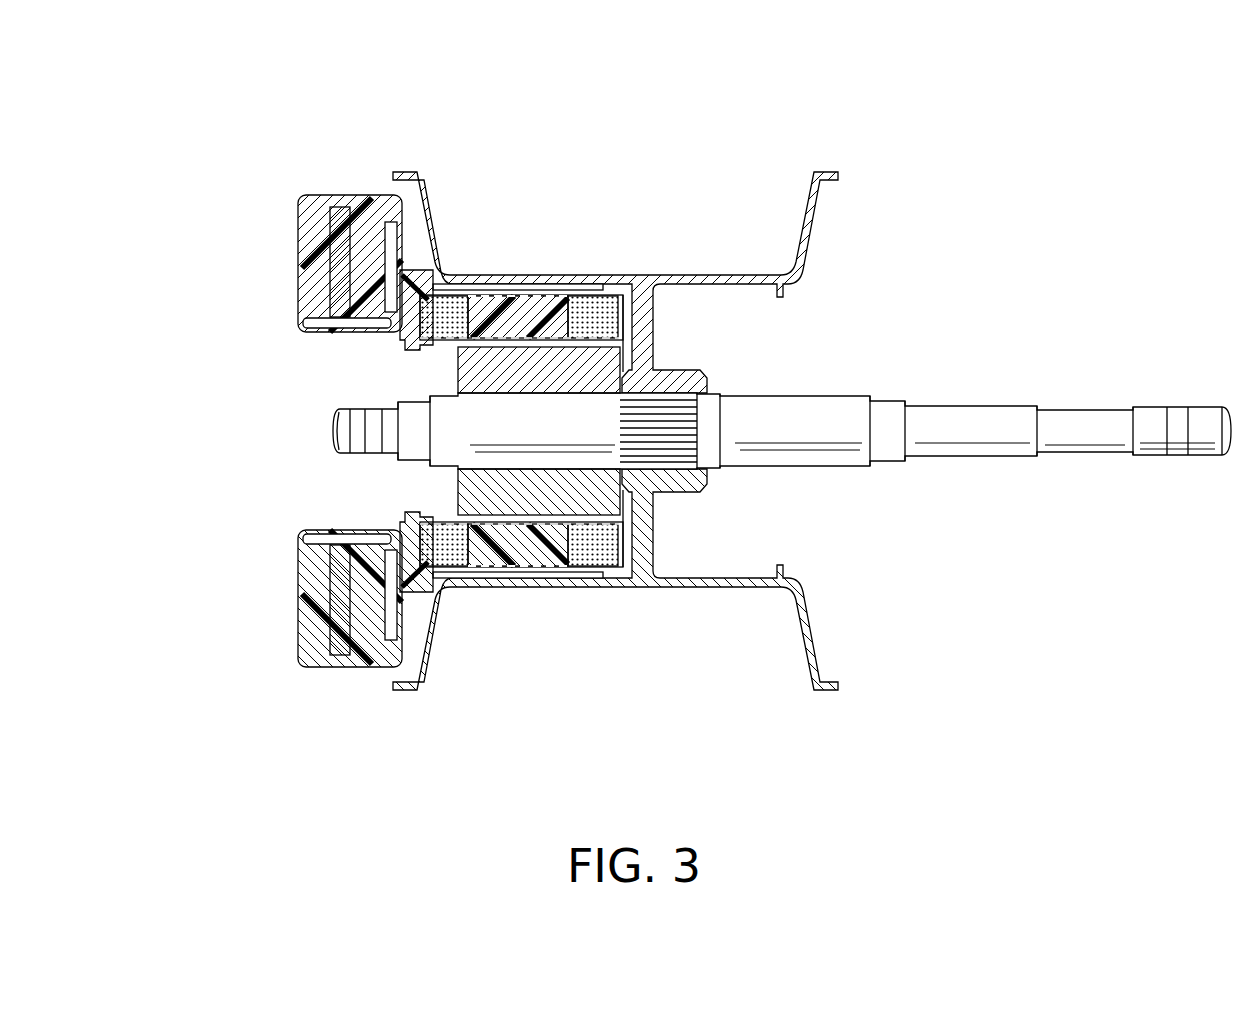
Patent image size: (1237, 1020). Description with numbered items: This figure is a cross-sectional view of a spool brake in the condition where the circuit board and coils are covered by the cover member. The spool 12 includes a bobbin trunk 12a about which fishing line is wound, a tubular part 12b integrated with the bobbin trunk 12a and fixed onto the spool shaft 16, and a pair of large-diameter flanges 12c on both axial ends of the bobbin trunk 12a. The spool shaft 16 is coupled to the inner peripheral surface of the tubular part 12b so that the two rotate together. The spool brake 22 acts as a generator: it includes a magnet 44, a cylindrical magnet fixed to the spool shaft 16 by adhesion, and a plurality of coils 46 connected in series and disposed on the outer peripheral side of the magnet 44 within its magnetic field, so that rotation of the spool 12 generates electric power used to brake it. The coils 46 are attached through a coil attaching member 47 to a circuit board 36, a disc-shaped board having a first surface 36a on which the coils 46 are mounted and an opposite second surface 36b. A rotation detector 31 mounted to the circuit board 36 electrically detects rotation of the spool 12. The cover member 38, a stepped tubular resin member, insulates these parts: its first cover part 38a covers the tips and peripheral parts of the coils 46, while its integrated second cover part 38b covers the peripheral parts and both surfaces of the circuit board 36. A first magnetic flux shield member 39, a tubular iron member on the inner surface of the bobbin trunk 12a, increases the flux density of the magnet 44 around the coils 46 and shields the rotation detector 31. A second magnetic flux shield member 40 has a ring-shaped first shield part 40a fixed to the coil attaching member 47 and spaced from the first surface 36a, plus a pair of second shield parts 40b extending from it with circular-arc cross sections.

The spool 12 is at (640, 273).
The bobbin trunk 12a is at (568, 283).
The tubular part 12b is at (683, 372).
The flanges 12c is at (438, 189).
The spool shaft 16 is at (815, 396).
The spool brake 22 is at (431, 365).
The rotation detector 31 is at (310, 330).
The circuit board 36 is at (305, 300).
The first surface 36a is at (355, 642).
The second surface 36b is at (330, 258).
The cover member 38 is at (300, 666).
The first cover part 38a is at (590, 588).
The second cover part 38b is at (330, 665).
The first magnetic flux shield member 39 is at (503, 587).
The second magnetic flux shield member 40 is at (382, 595).
The first shield part 40a is at (400, 632).
The second shield parts 40b is at (325, 330).
The magnet 44 is at (460, 493).
The coils 46 is at (633, 587).
The coil attaching member 47 is at (437, 582).